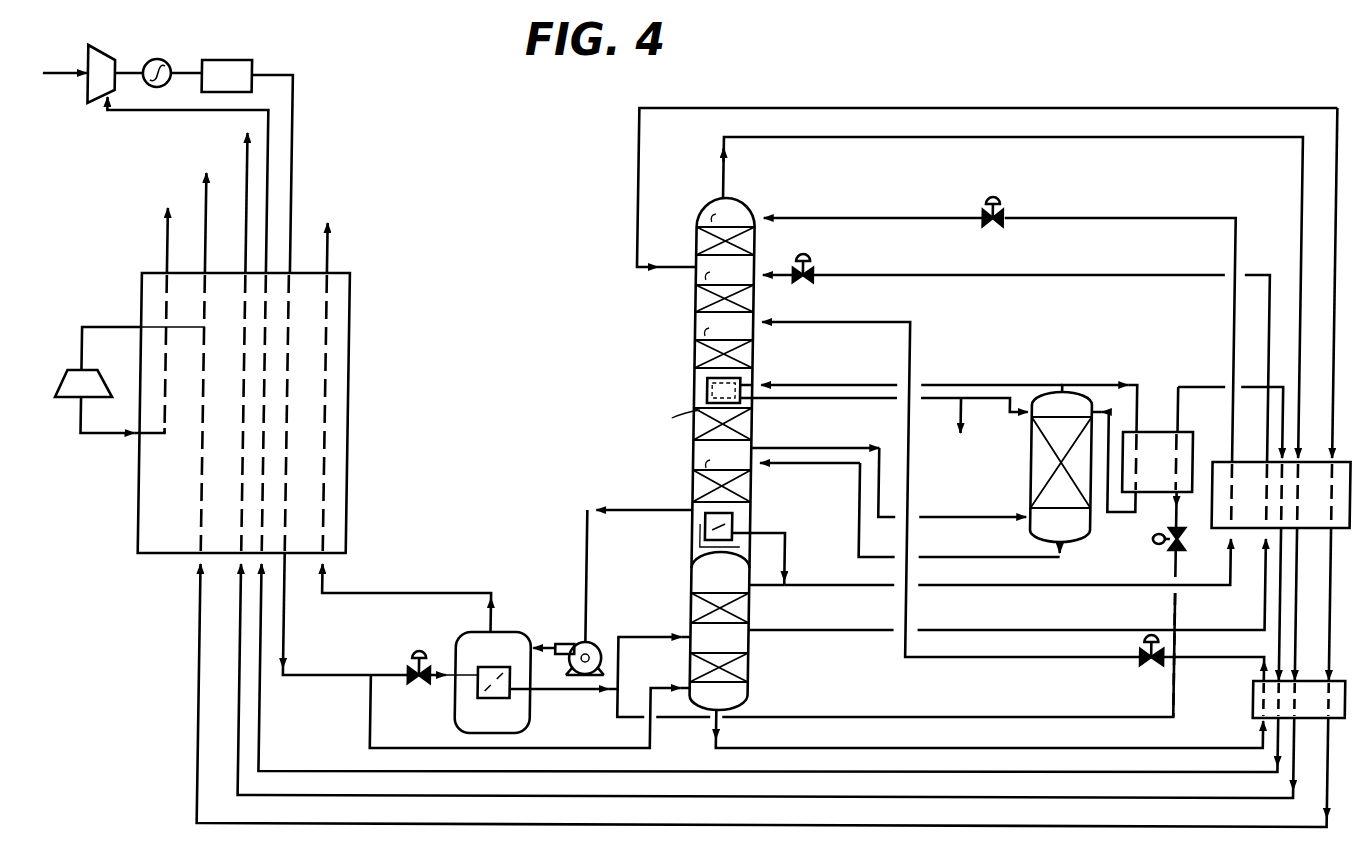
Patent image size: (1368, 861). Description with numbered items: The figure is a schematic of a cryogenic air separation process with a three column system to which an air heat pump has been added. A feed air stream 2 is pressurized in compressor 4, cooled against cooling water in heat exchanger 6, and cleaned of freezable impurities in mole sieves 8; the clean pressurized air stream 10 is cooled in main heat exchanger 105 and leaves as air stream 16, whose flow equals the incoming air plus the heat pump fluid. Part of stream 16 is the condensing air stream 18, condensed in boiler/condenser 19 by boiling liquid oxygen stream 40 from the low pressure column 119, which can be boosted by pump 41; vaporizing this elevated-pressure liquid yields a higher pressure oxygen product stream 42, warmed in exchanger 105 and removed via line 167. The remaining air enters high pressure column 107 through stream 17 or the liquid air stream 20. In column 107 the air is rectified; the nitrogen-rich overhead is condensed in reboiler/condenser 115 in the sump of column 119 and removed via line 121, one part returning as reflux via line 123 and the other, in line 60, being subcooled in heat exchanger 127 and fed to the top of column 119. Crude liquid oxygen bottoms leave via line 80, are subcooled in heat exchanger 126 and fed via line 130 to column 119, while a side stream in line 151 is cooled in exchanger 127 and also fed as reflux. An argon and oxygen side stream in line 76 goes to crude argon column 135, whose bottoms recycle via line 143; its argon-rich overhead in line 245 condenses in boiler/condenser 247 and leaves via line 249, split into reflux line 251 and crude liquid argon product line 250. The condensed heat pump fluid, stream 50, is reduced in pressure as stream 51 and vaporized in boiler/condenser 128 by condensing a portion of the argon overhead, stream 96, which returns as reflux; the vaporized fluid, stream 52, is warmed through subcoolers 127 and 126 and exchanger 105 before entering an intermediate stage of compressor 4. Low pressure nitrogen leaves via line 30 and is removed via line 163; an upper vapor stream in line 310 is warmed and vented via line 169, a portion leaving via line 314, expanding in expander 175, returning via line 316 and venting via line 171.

The feed air stream 2 is at (66, 68).
The compressor 4 is at (98, 58).
The heat exchanger 6 is at (152, 59).
The mole sieves 8 is at (207, 60).
The clean pressurized air stream 10 is at (297, 159).
The air stream 16 is at (328, 675).
The stream 17 is at (370, 718).
The condensing air stream 18 is at (383, 675).
The boiler/condenser 19 is at (462, 633).
The liquid air stream 20 is at (668, 638).
The line 30 is at (722, 182).
The liquid oxygen stream 40 is at (646, 510).
The pump 41 is at (575, 644).
The oxygen product stream 42 is at (496, 616).
The heat pump fluid stream 50 is at (1180, 572).
The stream 51 is at (1179, 510).
The vaporized heat pump fluid stream 52 is at (1200, 387).
The line 60 is at (985, 586).
The line 76 is at (820, 448).
The line 80 is at (1068, 748).
The crude argon column overhead stream 96 is at (1072, 386).
The main heat exchanger 105 is at (140, 518).
The high pressure column 107 is at (751, 648).
The reboiler/condenser 115 is at (737, 541).
The low pressure column 119 is at (694, 329).
The line 121 is at (786, 575).
The line 123 is at (765, 587).
The heat exchanger 126 is at (1252, 695).
The heat exchanger 127 is at (1245, 528).
The boiler/condenser 128 is at (1186, 432).
The line 130 is at (805, 322).
The crude argon column 135 is at (1031, 443).
The line 143 is at (985, 557).
The line 151 is at (1080, 630).
The line 163 is at (245, 259).
The line 167 is at (330, 258).
The line 169 is at (204, 210).
The line 171 is at (167, 236).
The expander 175 is at (66, 378).
The line 245 is at (1026, 379).
The boiler/condenser 247 is at (757, 386).
The line 249 is at (796, 398).
The line 250 is at (937, 421).
The line 251 is at (1010, 398).
The line 310 is at (637, 192).
The line 314 is at (113, 327).
The line 316 is at (104, 434).